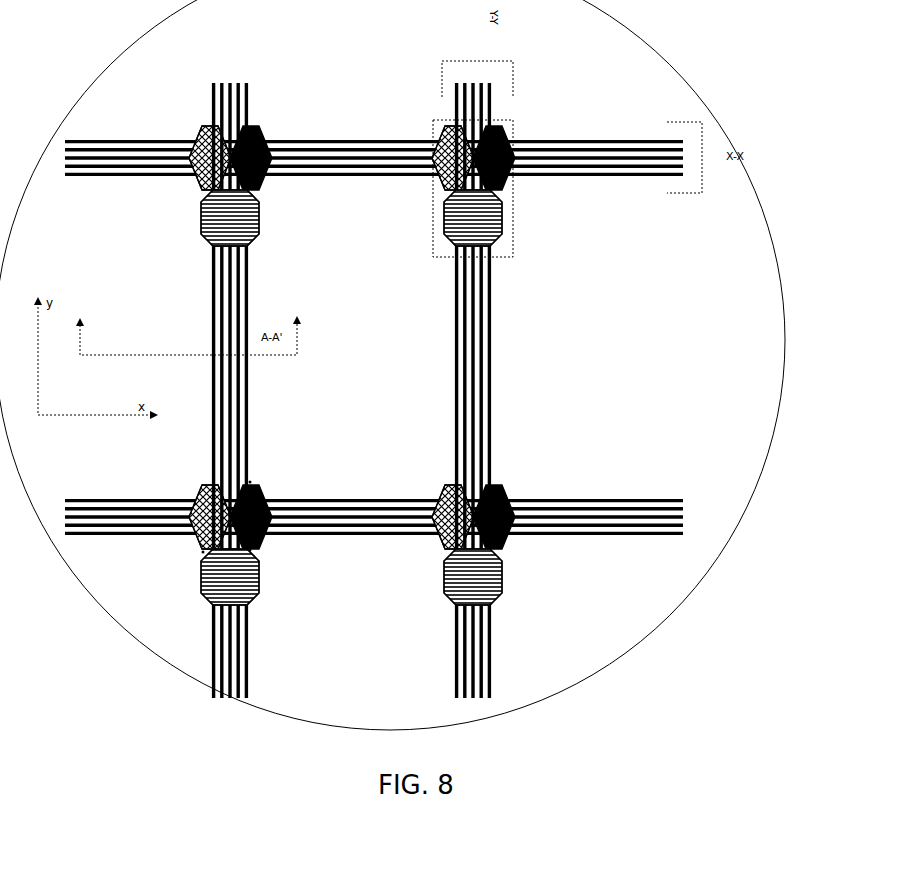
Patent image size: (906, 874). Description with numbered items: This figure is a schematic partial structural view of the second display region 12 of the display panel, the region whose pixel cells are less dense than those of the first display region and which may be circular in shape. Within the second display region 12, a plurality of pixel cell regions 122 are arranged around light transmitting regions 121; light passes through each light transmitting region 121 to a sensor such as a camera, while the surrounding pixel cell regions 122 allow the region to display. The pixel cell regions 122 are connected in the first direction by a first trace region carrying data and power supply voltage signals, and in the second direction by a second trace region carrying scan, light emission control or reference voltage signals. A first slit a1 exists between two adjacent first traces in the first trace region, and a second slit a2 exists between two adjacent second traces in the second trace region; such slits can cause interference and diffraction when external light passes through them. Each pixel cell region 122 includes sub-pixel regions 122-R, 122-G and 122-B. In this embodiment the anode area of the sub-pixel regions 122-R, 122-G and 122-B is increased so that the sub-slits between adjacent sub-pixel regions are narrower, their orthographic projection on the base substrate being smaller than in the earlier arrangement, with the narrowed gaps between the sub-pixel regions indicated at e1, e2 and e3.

The second display region 12 is at (752, 183).
The light transmitting region 121 is at (387, 318).
The pixel cell region 122 is at (513, 121).
The sub-pixel region 122-R is at (208, 490).
The sub-pixel region 122-G is at (270, 492).
The sub-pixel region 122-B is at (250, 597).
The first slit a1 is at (218, 83).
The second slit a2 is at (153, 143).
The first electrode e1 is at (250, 482).
The second electrode e2 is at (250, 550).
The third electrode e3 is at (203, 552).